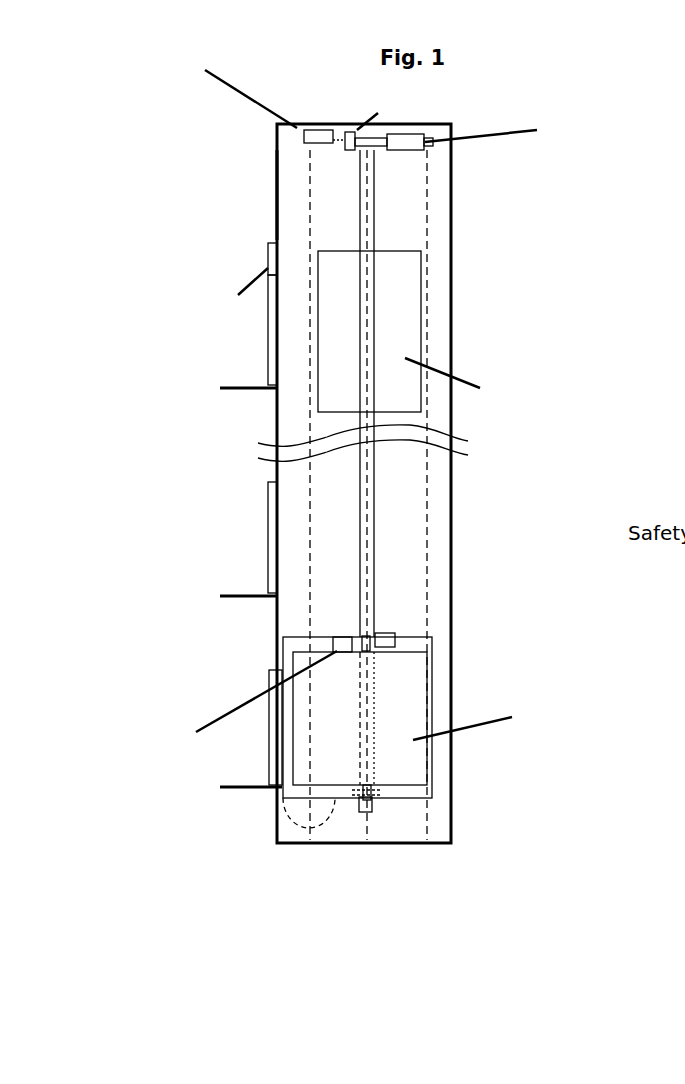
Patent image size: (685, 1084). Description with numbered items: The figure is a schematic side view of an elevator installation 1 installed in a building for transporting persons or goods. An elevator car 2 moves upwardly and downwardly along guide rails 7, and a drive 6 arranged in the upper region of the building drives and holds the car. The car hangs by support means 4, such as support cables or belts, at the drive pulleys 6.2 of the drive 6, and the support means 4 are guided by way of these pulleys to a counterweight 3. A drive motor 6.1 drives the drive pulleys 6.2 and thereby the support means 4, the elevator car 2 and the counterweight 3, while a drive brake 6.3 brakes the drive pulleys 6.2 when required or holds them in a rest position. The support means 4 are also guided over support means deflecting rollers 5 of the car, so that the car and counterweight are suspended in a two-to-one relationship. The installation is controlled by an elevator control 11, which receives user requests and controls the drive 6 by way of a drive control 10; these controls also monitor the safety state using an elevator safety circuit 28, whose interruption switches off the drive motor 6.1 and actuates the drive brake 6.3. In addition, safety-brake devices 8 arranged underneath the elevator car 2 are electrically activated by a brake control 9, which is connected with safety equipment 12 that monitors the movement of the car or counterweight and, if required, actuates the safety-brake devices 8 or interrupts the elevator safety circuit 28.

The elevator installation 1 is at (182, 620).
The elevator car 2 is at (393, 723).
The counterweight 3 is at (421, 312).
The support means 4 is at (363, 535).
The support means deflecting rollers 5 is at (375, 787).
The drive 6 is at (503, 175).
The drive motor 6.1 is at (413, 150).
The drive pulleys 6.2 is at (375, 150).
The drive brake 6.3 is at (350, 150).
The guide rails 7 is at (363, 433).
The safety-brake devices 8 is at (372, 808).
The brake control 9 is at (388, 633).
The drive control 10 is at (304, 140).
The elevator control 11 is at (268, 259).
The safety equipment 12 is at (337, 650).
The elevator safety circuit 28 is at (277, 195).